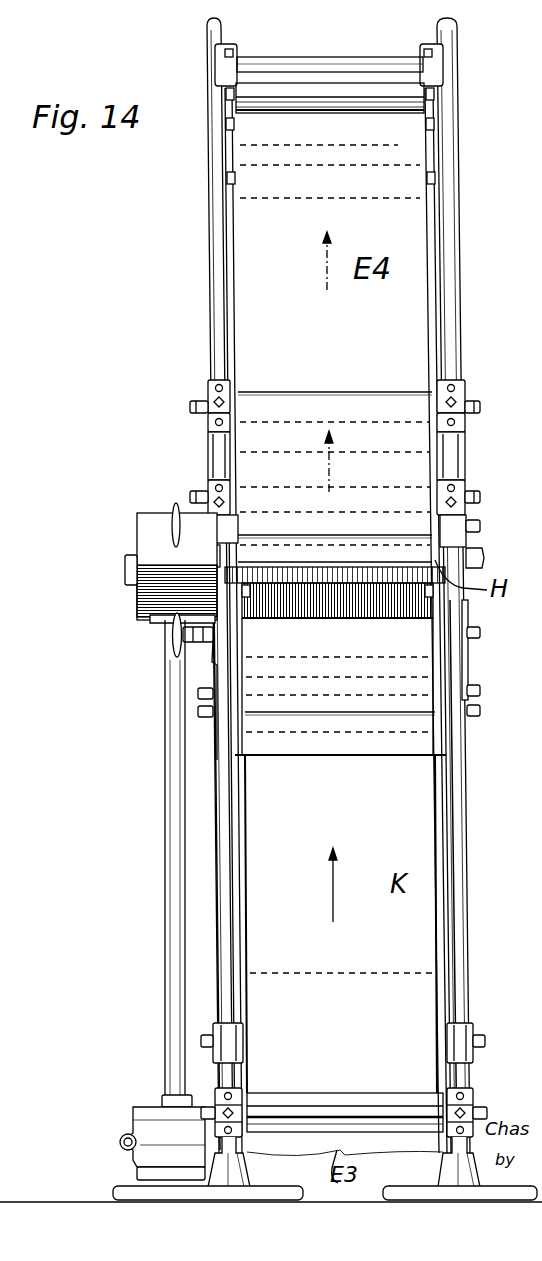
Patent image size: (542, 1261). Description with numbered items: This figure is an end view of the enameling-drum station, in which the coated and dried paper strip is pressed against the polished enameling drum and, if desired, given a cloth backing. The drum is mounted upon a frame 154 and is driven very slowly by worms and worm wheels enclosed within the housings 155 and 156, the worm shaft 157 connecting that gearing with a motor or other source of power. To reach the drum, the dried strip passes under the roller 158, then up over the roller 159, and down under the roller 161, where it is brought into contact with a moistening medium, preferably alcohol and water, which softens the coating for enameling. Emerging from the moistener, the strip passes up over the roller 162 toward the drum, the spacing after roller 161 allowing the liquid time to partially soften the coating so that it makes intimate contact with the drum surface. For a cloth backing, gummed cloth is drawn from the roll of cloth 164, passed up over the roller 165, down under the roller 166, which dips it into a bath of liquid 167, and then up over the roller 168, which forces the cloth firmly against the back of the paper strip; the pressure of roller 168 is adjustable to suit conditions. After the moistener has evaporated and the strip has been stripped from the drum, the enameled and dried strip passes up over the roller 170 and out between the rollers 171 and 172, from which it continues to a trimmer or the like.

The frame 154 is at (222, 816).
The housing 155 is at (160, 600).
The housing 156 is at (155, 1117).
The worm shaft 157 is at (120, 1140).
The roller 158 is at (348, 1110).
The roller 159 is at (327, 476).
The roller 161 is at (366, 512).
The roller 162 is at (343, 424).
The roll of cloth 164 is at (400, 972).
The roller 165 is at (318, 677).
The roller 166 is at (318, 696).
The bath of liquid 167 is at (425, 765).
The roller 168 is at (387, 657).
The roller 170 is at (355, 200).
The roller 171 is at (403, 148).
The roller 172 is at (365, 93).